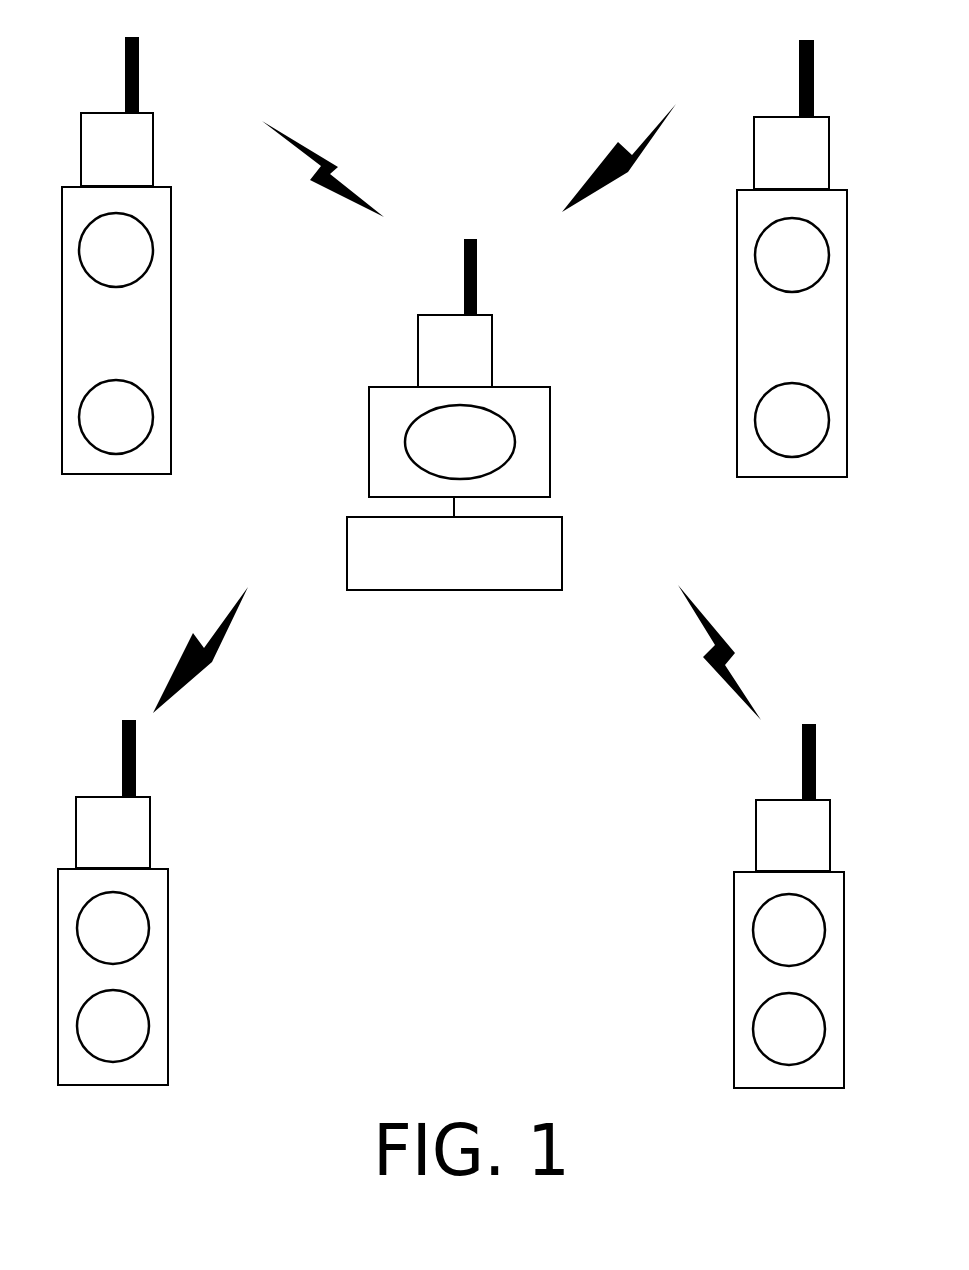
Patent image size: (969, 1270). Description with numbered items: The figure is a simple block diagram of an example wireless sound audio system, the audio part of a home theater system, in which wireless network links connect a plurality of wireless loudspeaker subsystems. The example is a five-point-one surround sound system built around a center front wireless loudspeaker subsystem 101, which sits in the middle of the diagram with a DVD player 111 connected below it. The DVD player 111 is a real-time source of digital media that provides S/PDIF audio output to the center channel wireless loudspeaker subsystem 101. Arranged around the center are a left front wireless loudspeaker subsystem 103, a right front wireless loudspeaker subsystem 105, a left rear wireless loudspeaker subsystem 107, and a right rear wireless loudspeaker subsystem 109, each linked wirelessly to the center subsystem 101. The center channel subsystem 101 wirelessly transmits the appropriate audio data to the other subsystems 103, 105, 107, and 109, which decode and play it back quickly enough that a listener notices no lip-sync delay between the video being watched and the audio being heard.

The center front wireless loudspeaker subsystem 101 is at (488, 313).
The left front wireless loudspeaker subsystem 103 is at (153, 113).
The right front wireless loudspeaker subsystem 105 is at (829, 117).
The left rear wireless loudspeaker subsystem 107 is at (150, 797).
The right rear wireless loudspeaker subsystem 109 is at (830, 800).
The DVD player 111 is at (532, 590).